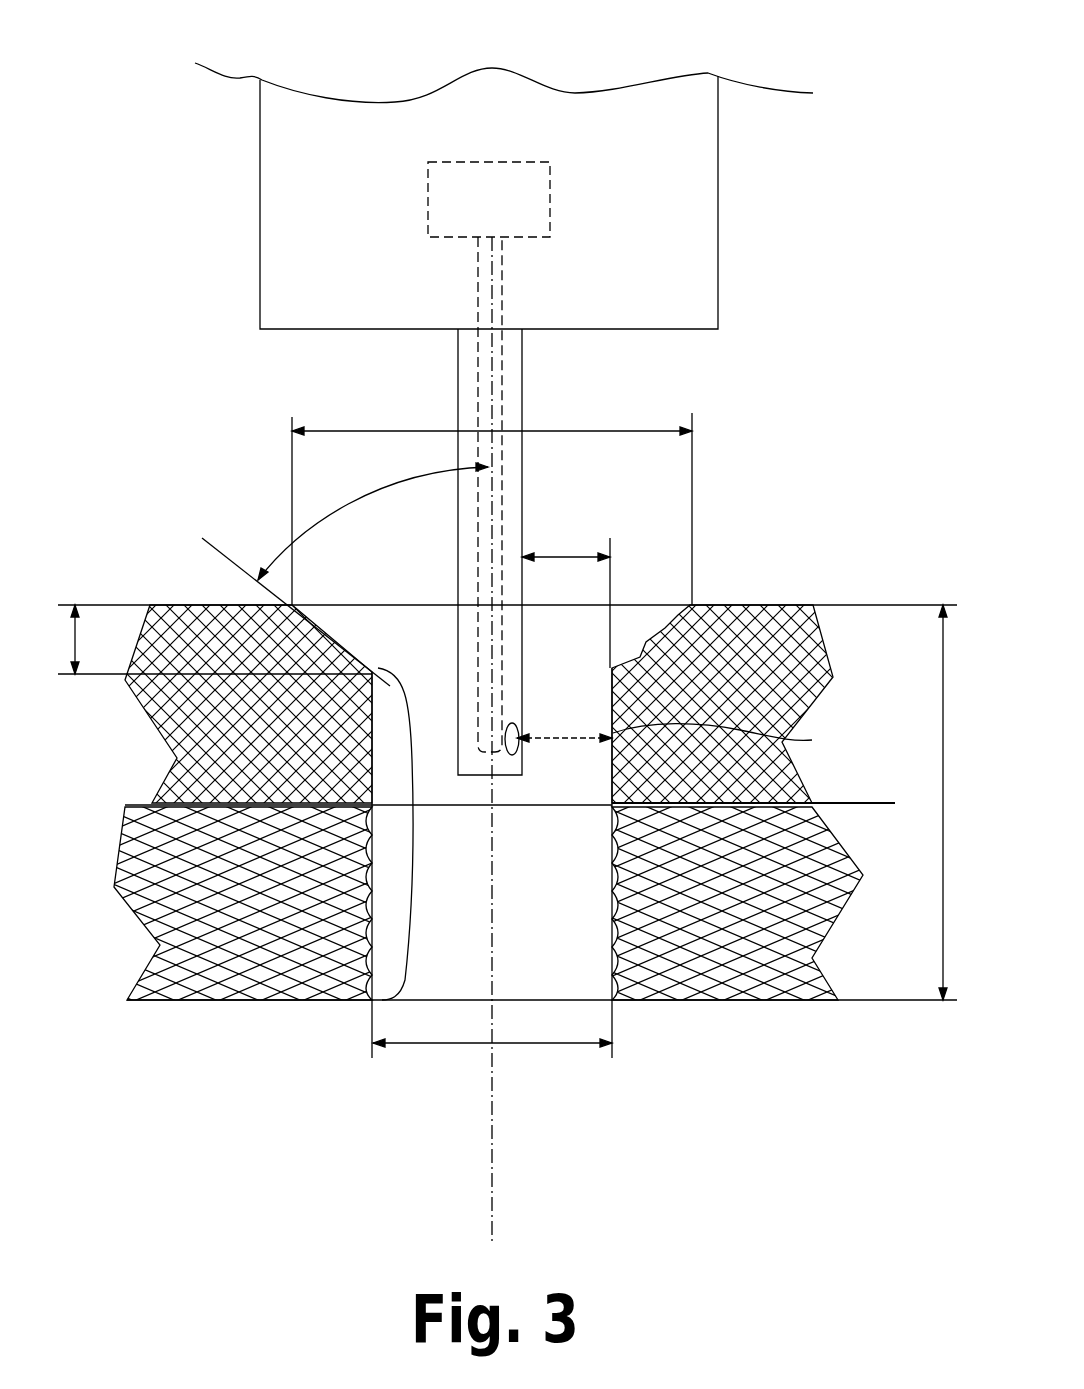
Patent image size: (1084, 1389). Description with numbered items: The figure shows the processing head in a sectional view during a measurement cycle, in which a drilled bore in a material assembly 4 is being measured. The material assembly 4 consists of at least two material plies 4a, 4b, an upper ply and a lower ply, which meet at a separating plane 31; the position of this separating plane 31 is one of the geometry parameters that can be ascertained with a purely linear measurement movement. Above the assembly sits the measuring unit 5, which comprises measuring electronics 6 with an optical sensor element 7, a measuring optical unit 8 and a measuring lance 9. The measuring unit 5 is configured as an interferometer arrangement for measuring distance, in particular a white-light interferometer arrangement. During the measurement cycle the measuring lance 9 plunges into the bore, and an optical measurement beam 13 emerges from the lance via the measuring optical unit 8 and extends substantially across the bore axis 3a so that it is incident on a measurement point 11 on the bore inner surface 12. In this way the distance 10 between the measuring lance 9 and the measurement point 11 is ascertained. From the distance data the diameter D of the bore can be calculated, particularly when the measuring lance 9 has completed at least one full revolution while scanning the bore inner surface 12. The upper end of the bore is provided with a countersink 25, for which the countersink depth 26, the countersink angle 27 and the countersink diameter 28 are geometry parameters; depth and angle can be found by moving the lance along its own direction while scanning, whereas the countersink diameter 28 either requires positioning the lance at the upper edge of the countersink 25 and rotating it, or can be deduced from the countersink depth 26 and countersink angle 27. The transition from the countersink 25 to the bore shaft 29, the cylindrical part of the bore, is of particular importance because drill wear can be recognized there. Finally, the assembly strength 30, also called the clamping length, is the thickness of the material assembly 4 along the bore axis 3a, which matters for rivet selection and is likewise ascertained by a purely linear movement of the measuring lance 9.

The bore axis 3a is at (492, 1141).
The material assembly 4 is at (840, 501).
The material ply 4a is at (790, 604).
The material ply 4b is at (767, 1000).
The measuring unit 5 is at (683, 265).
The measuring electronics 6 is at (606, 161).
The optical sensor element 7 is at (507, 172).
The measuring optical unit 8 is at (515, 713).
The measuring lance 9 is at (522, 413).
The distance 10 is at (562, 556).
The measurement point 11 is at (736, 736).
The bore inner surface 12 is at (541, 917).
The optical measurement beam 13 is at (583, 743).
The countersink 25 is at (350, 593).
The countersink depth 26 is at (75, 617).
The countersink angle 27 is at (337, 505).
The countersink diameter 28 is at (402, 430).
The bore shaft 29 is at (413, 833).
The assembly strength 30 is at (943, 850).
The separating plane 31 is at (895, 803).
The diameter D is at (528, 1043).